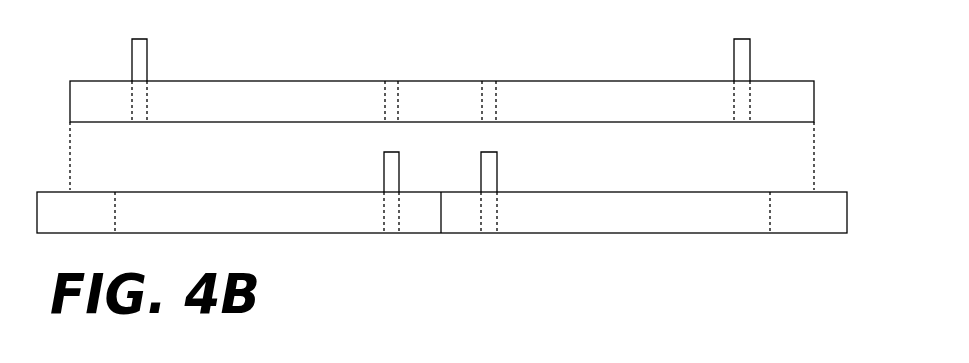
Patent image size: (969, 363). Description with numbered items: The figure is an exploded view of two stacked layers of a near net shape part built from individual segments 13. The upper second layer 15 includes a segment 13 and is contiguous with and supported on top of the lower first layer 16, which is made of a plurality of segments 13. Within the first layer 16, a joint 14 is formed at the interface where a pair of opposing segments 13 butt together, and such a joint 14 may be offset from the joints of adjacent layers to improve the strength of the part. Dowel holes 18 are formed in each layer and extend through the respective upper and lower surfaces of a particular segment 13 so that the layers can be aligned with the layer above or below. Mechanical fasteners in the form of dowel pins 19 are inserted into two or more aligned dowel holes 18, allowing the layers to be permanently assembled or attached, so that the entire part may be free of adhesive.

The individual segment 13 is at (643, 105).
The joint 14 is at (441, 233).
The second layer 15 is at (814, 102).
The first layer 16 is at (847, 212).
The dowel hole 18 is at (392, 81).
The dowel pin 19 is at (132, 60).